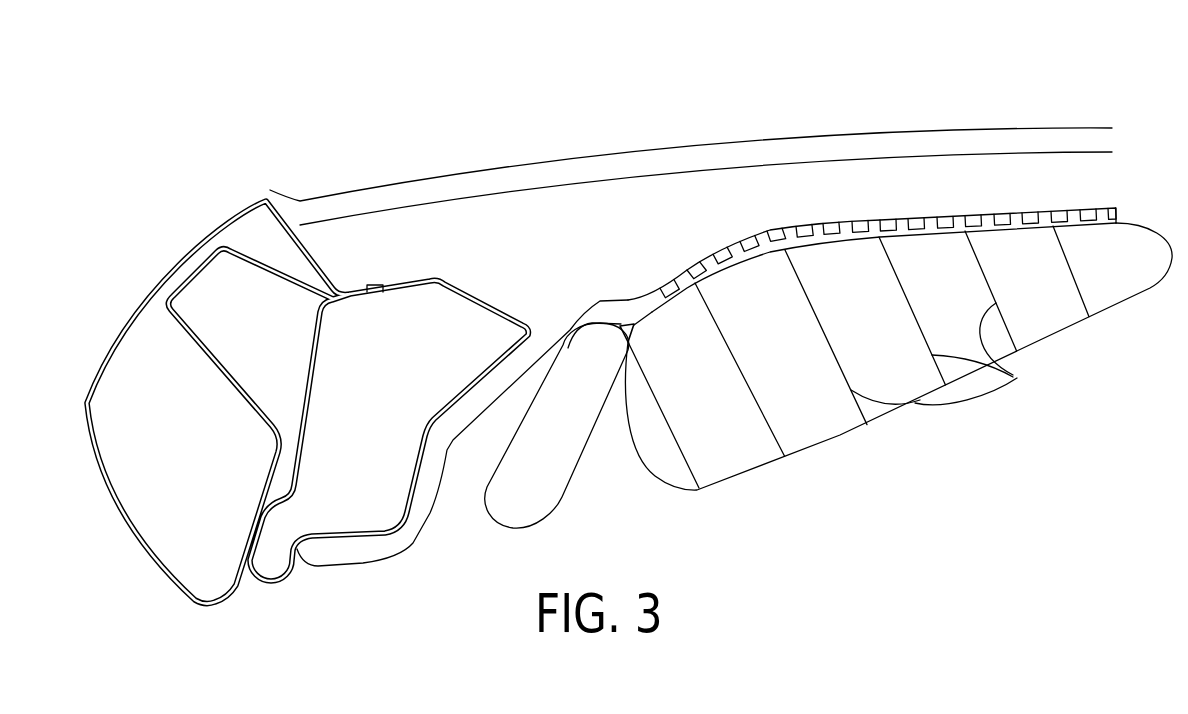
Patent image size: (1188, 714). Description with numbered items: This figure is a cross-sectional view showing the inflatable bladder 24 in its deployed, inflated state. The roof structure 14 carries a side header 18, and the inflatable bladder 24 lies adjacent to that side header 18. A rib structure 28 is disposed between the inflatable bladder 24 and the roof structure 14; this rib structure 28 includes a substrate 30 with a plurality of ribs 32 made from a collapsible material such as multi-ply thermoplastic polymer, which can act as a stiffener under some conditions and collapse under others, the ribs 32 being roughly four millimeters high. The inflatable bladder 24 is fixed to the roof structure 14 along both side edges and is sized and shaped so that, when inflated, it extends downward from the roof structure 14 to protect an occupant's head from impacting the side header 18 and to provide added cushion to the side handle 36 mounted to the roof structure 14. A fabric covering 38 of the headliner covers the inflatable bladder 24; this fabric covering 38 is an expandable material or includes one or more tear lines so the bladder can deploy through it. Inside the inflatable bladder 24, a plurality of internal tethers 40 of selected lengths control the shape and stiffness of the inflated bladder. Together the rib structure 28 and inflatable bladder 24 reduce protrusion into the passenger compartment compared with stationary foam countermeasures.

The roof structure 14 is at (886, 122).
The side header 18 is at (400, 287).
The inflatable bladder 24 is at (830, 441).
The rib structure 28 is at (949, 214).
The substrate 30 is at (843, 221).
The ribs 32 is at (1018, 215).
The side handle 36 is at (543, 455).
The fabric covering 38 is at (628, 336).
The internal tethers 40 is at (1013, 377).